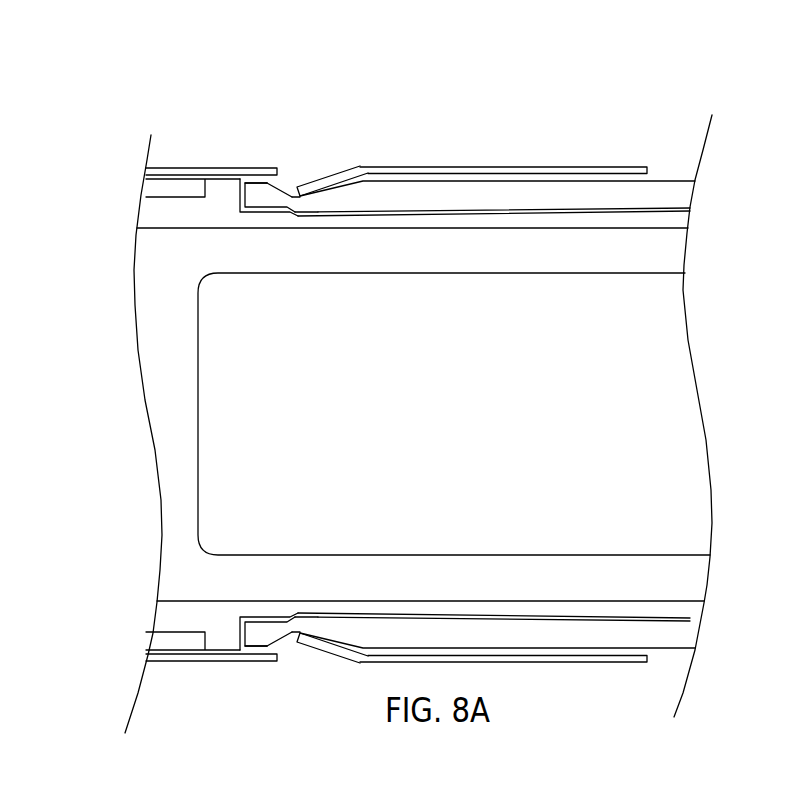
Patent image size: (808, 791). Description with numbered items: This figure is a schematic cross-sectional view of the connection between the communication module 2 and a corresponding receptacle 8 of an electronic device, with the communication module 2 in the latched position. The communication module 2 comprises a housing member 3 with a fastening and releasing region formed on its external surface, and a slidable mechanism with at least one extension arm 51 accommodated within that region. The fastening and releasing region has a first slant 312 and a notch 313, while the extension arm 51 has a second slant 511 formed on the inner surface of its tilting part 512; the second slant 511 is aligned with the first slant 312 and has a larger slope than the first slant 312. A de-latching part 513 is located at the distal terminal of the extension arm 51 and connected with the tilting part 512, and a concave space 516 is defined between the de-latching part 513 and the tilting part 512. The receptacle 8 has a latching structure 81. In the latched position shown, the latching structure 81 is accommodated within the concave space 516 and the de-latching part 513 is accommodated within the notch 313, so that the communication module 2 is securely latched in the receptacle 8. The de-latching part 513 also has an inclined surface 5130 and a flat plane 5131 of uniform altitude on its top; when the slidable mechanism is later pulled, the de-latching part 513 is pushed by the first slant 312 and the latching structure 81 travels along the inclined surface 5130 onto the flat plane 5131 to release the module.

The communication module 2 is at (768, 313).
The housing member 3 is at (160, 309).
The receptacle 8 is at (183, 170).
The latching structure 81 is at (338, 176).
The extension arm 51 is at (610, 193).
The second slant 511 is at (317, 213).
The tilting part 512 is at (307, 203).
The de-latching part 513 is at (258, 188).
The inclined surface 5130 is at (284, 180).
The flat plane 5131 is at (257, 188).
The concave space 516 is at (290, 183).
The first slant 312 is at (390, 213).
The notch 313 is at (242, 178).